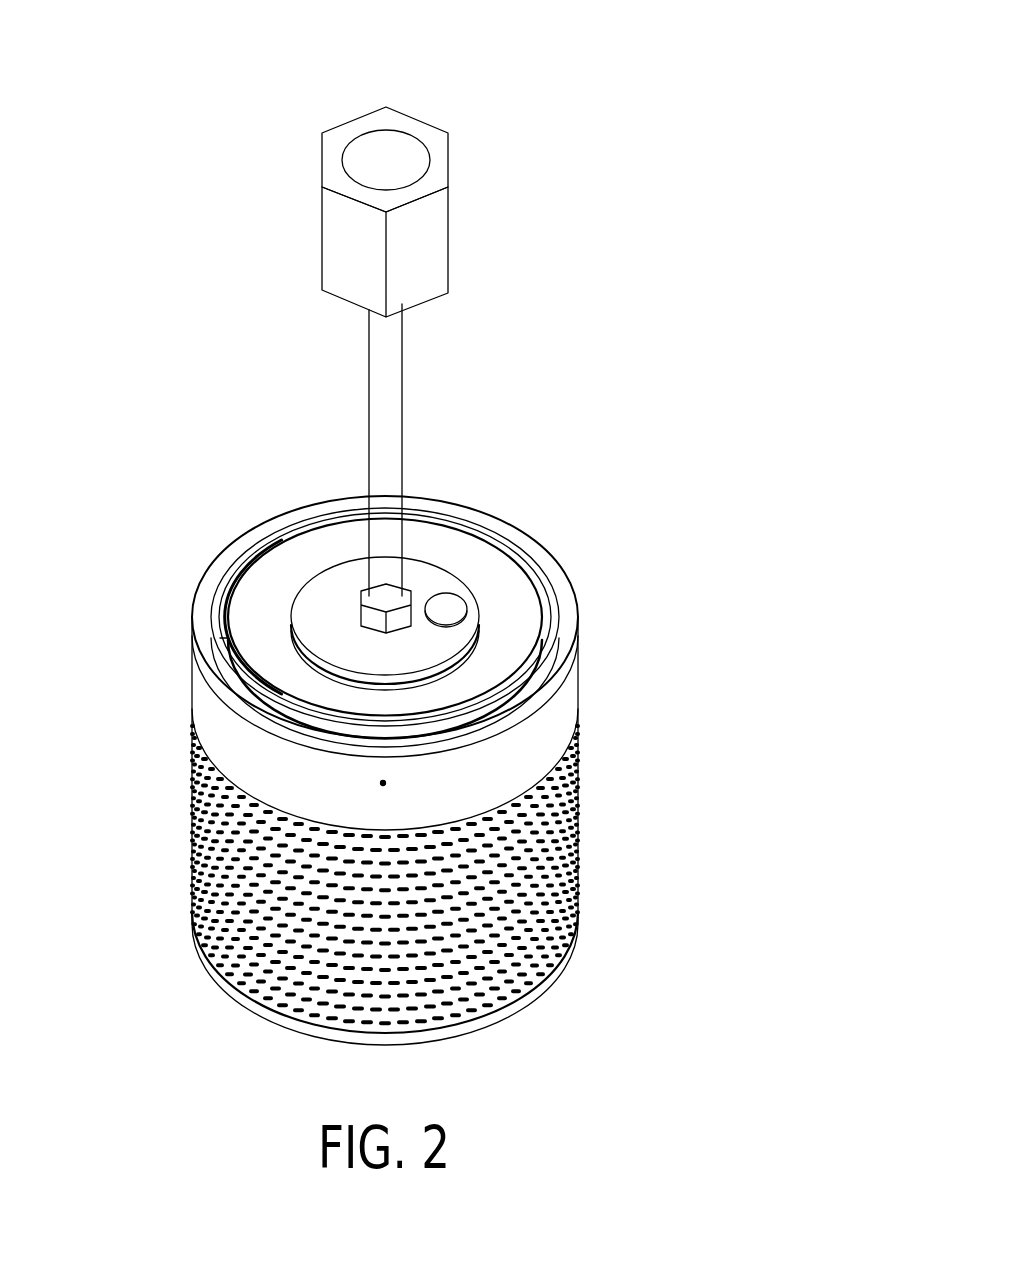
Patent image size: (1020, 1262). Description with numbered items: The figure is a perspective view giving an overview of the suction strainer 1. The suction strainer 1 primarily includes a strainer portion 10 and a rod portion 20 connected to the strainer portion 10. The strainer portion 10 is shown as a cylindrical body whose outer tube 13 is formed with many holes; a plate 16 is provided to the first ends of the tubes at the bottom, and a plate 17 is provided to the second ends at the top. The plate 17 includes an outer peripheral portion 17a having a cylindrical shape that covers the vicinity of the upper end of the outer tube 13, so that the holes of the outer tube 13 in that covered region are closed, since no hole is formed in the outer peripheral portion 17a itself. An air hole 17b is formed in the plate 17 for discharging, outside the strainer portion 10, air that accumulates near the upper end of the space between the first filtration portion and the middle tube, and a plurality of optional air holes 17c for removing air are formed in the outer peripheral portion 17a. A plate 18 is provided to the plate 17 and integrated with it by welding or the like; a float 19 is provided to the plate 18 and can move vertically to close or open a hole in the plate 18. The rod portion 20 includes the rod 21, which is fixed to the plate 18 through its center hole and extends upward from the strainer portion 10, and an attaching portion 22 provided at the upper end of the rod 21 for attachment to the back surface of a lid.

The suction strainer 1 is at (643, 49).
The strainer portion 10 is at (684, 584).
The outer tube 13 is at (578, 778).
The plate 16 is at (262, 1008).
The plate 17 is at (565, 605).
The outer peripheral portion 17a is at (567, 700).
The air hole 17b is at (222, 650).
The air holes 17c is at (383, 783).
The plate 18 is at (513, 595).
The float 19 is at (448, 612).
The rod portion 20 is at (512, 317).
The rod 21 is at (392, 408).
The attaching portion 22 is at (435, 237).